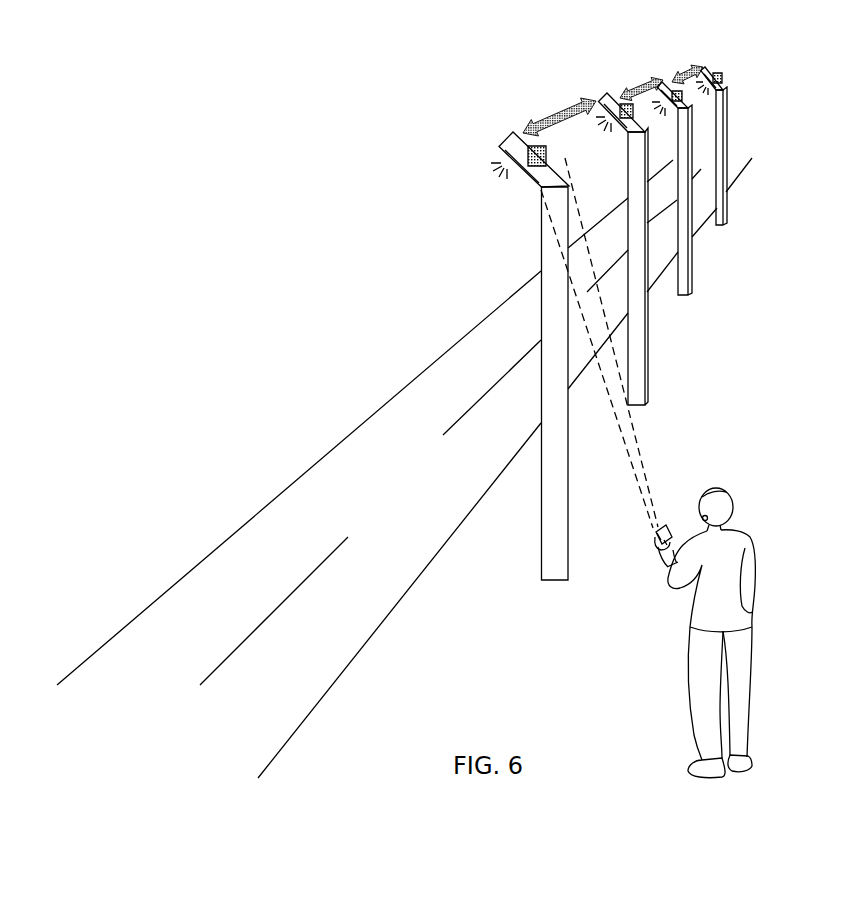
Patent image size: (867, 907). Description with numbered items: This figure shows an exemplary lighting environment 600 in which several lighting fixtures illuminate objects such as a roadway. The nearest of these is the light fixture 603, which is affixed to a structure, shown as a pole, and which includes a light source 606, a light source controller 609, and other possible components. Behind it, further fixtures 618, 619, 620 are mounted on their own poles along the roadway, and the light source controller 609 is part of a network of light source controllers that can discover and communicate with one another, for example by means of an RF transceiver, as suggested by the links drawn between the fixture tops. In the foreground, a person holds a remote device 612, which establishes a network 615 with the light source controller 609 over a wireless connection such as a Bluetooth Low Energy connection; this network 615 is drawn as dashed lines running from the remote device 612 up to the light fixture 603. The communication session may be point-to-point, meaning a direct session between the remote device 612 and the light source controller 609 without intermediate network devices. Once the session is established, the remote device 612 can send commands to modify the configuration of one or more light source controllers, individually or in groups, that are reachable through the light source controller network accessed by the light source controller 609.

The lighting environment 600 is at (290, 148).
The light fixture 603 is at (508, 121).
The light source 606 is at (490, 158).
The light source controller 609 is at (544, 146).
The remote device 612 is at (669, 522).
The network 615 is at (619, 465).
The second light fixture 618 is at (621, 91).
The third light fixture 619 is at (669, 78).
The fourth light fixture 620 is at (711, 61).